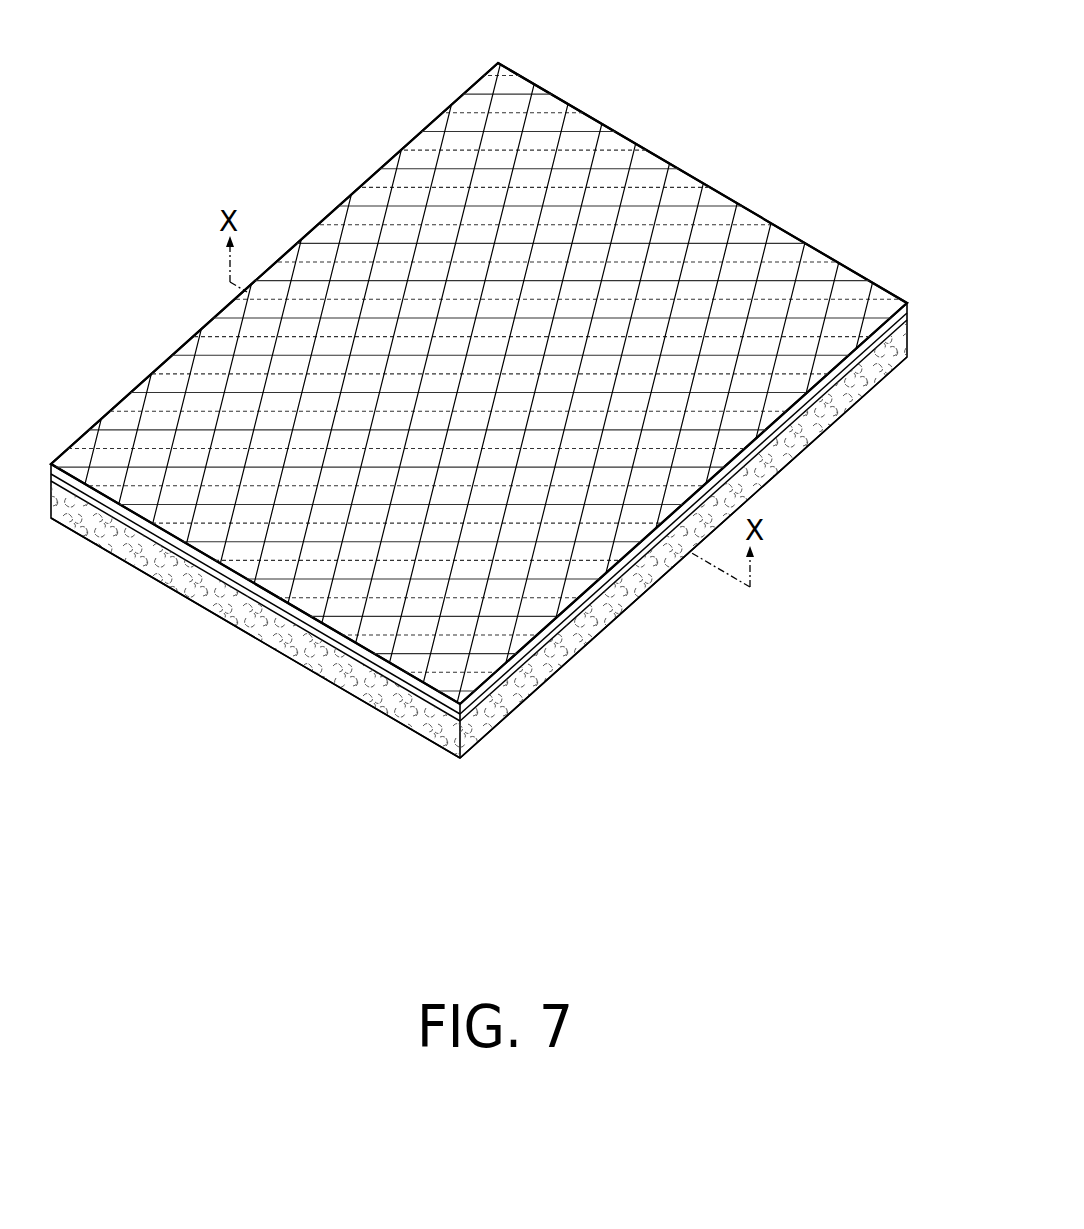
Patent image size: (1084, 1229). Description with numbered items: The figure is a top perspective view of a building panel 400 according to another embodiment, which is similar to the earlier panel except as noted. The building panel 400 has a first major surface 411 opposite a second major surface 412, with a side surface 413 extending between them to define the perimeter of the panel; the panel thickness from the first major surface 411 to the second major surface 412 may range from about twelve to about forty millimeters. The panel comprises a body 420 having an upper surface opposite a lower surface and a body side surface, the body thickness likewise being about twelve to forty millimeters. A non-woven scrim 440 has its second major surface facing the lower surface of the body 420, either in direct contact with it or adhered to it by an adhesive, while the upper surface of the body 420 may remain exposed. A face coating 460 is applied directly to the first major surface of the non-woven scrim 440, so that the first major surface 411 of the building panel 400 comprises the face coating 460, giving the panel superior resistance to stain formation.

The building panel 400 is at (784, 148).
The first major surface 411 is at (365, 240).
The second major surface 412 is at (572, 658).
The side surface 413 is at (813, 413).
The body 420 is at (352, 680).
The non-woven scrim 440 is at (165, 540).
The face coating 460 is at (133, 436).